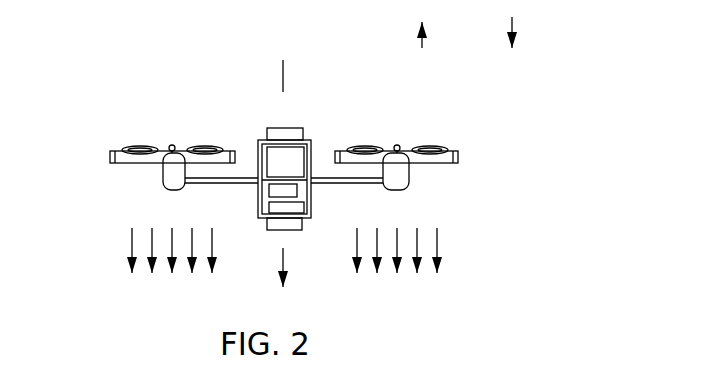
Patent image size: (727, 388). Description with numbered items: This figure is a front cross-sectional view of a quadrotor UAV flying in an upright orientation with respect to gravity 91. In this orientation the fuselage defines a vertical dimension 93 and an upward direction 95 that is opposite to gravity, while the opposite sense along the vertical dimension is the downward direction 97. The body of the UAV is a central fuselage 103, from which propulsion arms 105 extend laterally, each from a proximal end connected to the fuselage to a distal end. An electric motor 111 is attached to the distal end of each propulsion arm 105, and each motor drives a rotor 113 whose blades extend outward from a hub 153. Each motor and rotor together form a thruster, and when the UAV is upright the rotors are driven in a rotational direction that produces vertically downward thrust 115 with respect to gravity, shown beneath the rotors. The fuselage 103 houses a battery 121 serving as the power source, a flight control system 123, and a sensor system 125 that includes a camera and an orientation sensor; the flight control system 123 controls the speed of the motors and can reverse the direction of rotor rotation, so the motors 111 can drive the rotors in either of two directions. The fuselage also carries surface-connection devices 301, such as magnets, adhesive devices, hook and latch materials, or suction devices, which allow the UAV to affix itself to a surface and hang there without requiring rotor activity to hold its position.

The gravity 91 is at (285, 265).
The vertical dimension 93 is at (285, 75).
The upward direction 95 is at (424, 40).
The downward direction 97 is at (514, 26).
The central fuselage 103 is at (312, 140).
The propulsion arm 105 is at (237, 179).
The electric motor 111 is at (172, 174).
The rotor 113 is at (367, 148).
The vertically downward thrust 115 is at (438, 246).
The battery 121 is at (295, 210).
The flight control system 123 is at (287, 163).
The sensor system 125 is at (280, 189).
The hub 153 is at (398, 149).
The surface-connection device 301 is at (277, 128).